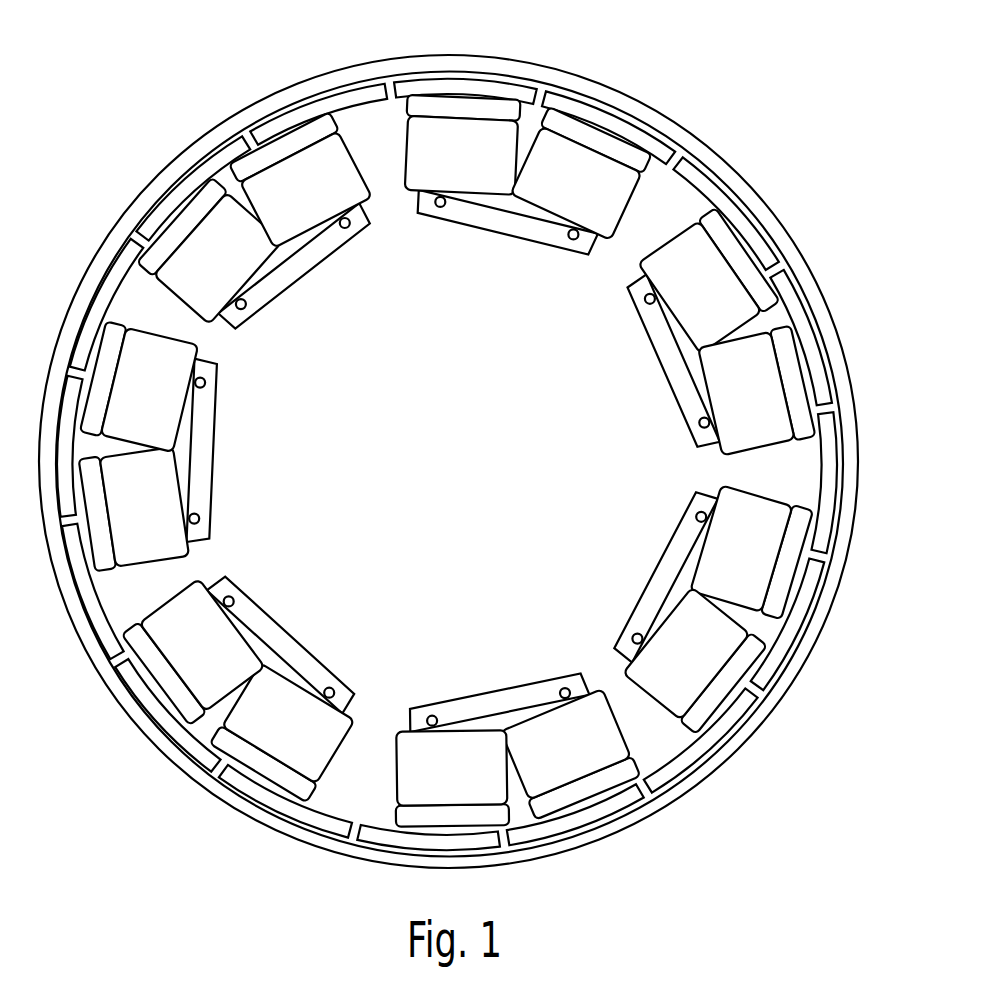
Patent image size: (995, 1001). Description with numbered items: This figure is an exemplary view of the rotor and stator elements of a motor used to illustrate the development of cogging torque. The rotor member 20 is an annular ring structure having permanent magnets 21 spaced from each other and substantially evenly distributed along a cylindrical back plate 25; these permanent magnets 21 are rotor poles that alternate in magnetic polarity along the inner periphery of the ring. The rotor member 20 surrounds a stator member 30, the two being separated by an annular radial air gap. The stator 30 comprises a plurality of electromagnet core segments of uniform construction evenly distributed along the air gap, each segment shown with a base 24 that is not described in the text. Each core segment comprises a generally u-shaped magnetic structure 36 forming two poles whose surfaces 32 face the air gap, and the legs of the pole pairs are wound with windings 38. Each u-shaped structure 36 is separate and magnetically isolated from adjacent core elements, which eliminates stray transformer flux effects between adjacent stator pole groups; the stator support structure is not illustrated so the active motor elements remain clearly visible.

The rotor member 20 is at (461, 440).
The permanent magnets 21 is at (700, 172).
The seat base plate 24 is at (537, 248).
The cylindrical back plate 25 is at (634, 100).
The stator member 30 is at (447, 419).
The pole surfaces 32 is at (442, 108).
The u-shaped magnetic structure 36 is at (458, 210).
The windings 38 is at (478, 132).